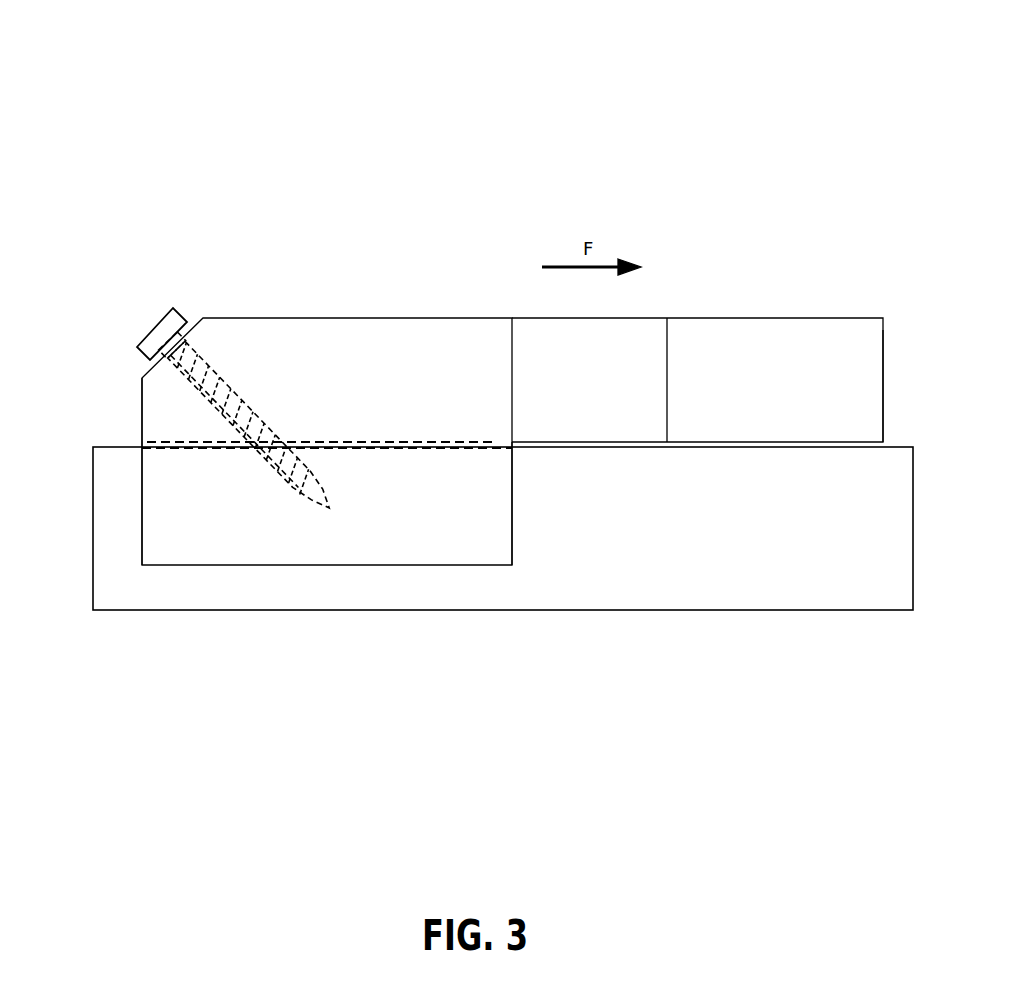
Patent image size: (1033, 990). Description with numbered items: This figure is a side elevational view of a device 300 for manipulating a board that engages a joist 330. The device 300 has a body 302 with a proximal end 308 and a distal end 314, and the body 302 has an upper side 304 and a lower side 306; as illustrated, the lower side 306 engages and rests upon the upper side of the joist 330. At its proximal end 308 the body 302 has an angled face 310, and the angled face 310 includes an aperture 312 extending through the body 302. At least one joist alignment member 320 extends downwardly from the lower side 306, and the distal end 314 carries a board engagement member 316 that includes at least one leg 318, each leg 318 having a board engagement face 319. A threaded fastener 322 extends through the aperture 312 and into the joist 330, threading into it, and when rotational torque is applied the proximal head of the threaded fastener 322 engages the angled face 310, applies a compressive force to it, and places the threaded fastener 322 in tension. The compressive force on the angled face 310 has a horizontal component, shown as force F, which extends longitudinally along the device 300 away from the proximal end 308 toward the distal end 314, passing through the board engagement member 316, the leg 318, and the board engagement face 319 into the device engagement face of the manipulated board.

The device 300 is at (360, 128).
The body 302 is at (311, 256).
The upper side 304 is at (433, 317).
The lower side 306 is at (485, 442).
The proximal end 308 is at (129, 222).
The angled face 310 is at (143, 377).
The aperture 312 is at (180, 388).
The distal end 314 is at (800, 237).
The board engagement member 316 is at (747, 495).
The leg 318 is at (803, 417).
The board engagement face 319 is at (883, 390).
The joist alignment member 320 is at (250, 542).
The threaded fastener 322 is at (157, 330).
The joist 330 is at (609, 549).